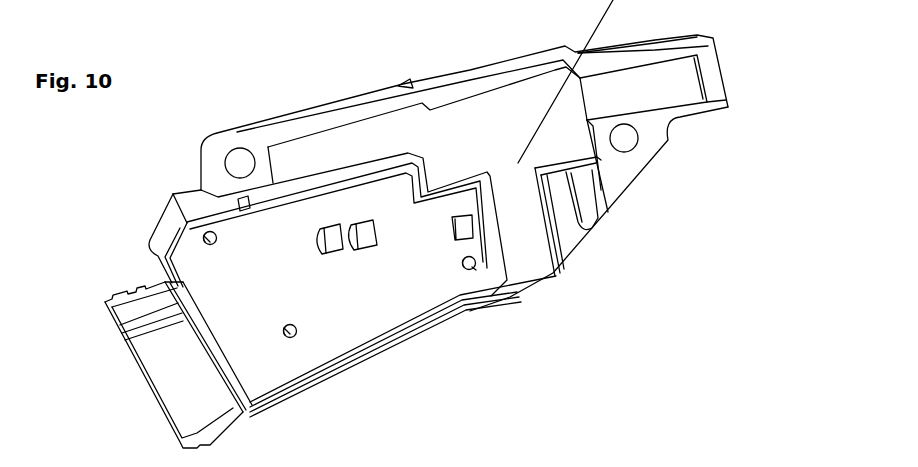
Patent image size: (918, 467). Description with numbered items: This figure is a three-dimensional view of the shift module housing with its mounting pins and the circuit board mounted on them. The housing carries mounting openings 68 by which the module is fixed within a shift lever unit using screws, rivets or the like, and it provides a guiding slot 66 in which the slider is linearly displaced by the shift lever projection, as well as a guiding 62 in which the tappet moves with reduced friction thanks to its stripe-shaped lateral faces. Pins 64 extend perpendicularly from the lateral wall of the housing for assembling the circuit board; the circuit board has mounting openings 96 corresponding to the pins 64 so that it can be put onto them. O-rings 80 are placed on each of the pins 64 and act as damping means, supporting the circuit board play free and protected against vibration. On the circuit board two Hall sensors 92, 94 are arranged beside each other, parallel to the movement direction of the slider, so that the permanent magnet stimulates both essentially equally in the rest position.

The guiding 62 is at (522, 226).
The pins 64 is at (207, 233).
The guiding slot 66 is at (664, 88).
The mounting openings 68 is at (241, 166).
The O-rings 80 is at (471, 0).
The Hall sensor 92 is at (332, 240).
The Hall sensor 94 is at (369, 240).
The mounting openings 96 is at (284, 328).